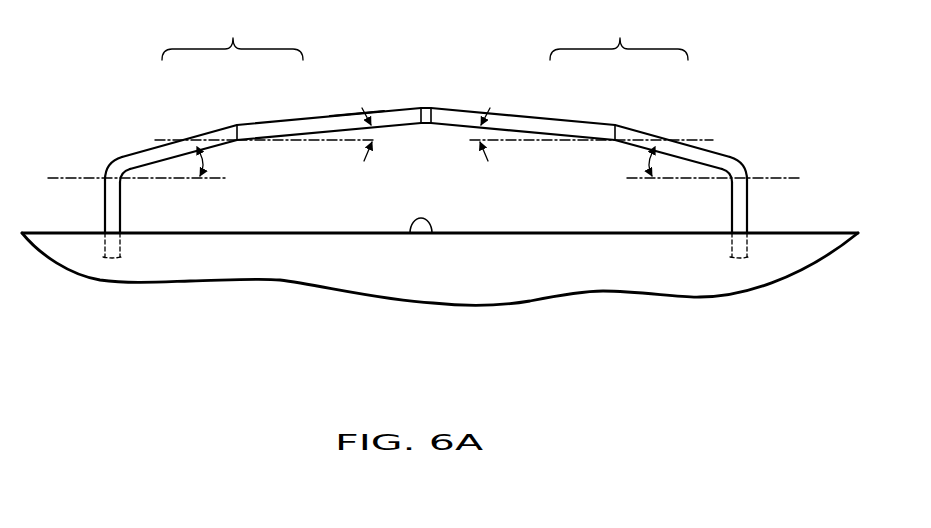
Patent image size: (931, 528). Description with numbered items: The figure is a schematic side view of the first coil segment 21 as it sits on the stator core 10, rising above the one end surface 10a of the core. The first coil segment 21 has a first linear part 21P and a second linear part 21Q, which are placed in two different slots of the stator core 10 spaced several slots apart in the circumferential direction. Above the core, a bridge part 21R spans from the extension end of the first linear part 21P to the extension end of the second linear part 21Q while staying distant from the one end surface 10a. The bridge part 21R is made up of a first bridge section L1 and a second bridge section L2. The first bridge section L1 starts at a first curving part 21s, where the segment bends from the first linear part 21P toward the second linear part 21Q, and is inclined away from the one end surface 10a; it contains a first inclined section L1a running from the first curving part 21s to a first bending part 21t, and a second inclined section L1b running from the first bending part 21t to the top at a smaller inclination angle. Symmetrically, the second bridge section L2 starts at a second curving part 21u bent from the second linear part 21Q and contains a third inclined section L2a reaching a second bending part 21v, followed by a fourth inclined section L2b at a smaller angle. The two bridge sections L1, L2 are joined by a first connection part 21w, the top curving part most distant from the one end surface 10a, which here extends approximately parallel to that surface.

The stator core 10 is at (440, 293).
The one end surface 10a is at (433, 233).
The first coil segment 21 is at (421, 131).
The first curving part 21s is at (116, 163).
The second curving part 21u is at (745, 166).
The first linear part 21P is at (108, 213).
The second linear part 21Q is at (733, 213).
The first bending part 21t is at (244, 138).
The second bending part 21v is at (608, 136).
The first connection part 21w is at (427, 108).
The bridge part 21R is at (383, 103).
The first bridge section L1 is at (232, 34).
The first inclined section L1a is at (173, 137).
The second inclined section L1b is at (297, 125).
The second bridge section L2 is at (619, 34).
The third inclined section L2a is at (686, 138).
The fourth inclined section L2b is at (550, 125).